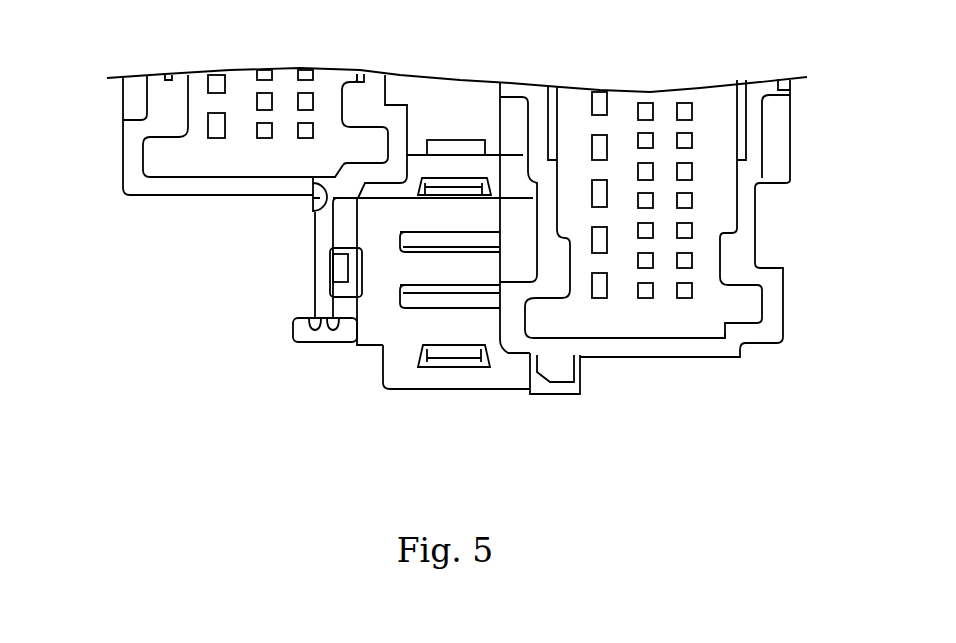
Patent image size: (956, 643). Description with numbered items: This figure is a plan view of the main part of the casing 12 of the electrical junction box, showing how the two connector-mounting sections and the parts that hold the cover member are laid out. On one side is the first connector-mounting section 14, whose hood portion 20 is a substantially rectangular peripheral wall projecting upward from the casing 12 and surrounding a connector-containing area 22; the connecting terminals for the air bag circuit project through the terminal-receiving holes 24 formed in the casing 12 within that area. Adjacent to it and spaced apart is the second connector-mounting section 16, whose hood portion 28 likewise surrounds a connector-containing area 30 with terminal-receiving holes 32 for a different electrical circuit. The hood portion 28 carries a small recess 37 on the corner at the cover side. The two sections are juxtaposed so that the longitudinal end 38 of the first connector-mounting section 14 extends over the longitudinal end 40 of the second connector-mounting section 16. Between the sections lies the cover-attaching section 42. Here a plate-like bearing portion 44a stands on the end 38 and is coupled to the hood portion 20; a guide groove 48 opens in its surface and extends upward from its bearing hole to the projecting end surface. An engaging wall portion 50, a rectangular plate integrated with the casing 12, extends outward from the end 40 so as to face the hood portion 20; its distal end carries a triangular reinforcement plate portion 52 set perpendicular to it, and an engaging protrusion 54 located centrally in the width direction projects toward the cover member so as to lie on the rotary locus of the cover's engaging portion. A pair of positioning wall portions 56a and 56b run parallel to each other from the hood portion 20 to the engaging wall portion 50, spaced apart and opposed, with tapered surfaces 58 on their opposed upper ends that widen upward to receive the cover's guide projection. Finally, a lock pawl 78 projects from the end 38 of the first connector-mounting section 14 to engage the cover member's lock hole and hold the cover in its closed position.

The casing 12 is at (422, 93).
The first connector-mounting section 14 is at (810, 94).
The second connector-mounting section 16 is at (108, 95).
The hood portion 20 is at (748, 151).
The connector-containing area 22 is at (718, 184).
The terminal-receiving holes 24 is at (603, 147).
The hood portion 28 is at (135, 157).
The connector-containing area 30 is at (188, 100).
The terminal-receiving holes 32 is at (217, 127).
The recess 37 is at (318, 208).
The longitudinal end 38 is at (710, 358).
The longitudinal end 40 is at (183, 183).
The cover-attaching section 42 is at (341, 368).
The bearing portion 44a is at (403, 360).
The guide grooves 48 is at (436, 186).
The engaging wall portion 50 is at (323, 290).
The triangular reinforcement plate portion 52 is at (300, 328).
The engaging protrusion 54 is at (340, 265).
The positioning wall portion 56a is at (485, 302).
The positioning wall portion 56b is at (503, 237).
The tapered surfaces 58 is at (466, 240).
The lock pawl 78 is at (555, 367).